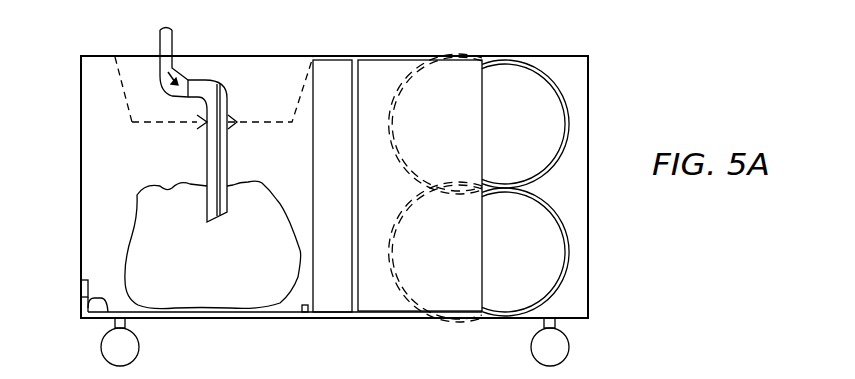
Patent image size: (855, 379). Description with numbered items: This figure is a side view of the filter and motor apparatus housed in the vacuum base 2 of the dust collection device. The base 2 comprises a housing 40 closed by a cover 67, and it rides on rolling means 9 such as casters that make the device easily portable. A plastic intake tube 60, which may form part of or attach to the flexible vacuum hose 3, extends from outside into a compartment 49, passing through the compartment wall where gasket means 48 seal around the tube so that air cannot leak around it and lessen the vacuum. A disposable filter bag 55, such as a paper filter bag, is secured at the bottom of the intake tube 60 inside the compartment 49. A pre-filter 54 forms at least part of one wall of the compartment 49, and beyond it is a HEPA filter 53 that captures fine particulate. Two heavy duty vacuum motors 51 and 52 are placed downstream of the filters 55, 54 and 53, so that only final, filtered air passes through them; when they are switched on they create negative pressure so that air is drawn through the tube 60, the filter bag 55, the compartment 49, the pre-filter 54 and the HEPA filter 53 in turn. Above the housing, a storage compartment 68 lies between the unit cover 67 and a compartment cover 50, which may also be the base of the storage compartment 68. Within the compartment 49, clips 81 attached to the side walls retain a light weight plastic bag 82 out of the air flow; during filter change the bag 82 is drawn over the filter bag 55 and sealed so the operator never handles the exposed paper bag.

The vacuum base 2 is at (589, 128).
The flexible vacuum hose 3 is at (175, 43).
The rolling means 9 is at (101, 346).
The housing 40 is at (417, 58).
The gasket means 48 is at (199, 127).
The compartment 49 is at (88, 166).
The compartment cover 50 is at (122, 88).
The vacuum motor 51 is at (563, 96).
The vacuum motor 52 is at (569, 250).
The HEPA filter 53 is at (429, 303).
The pre-filter 54 is at (336, 68).
The disposable filter bag 55 is at (183, 298).
The intake tube 60 is at (227, 86).
The cover 67 is at (267, 56).
The storage compartment 68 is at (124, 62).
The clips 81 is at (81, 285).
The plastic bag 82 is at (88, 303).